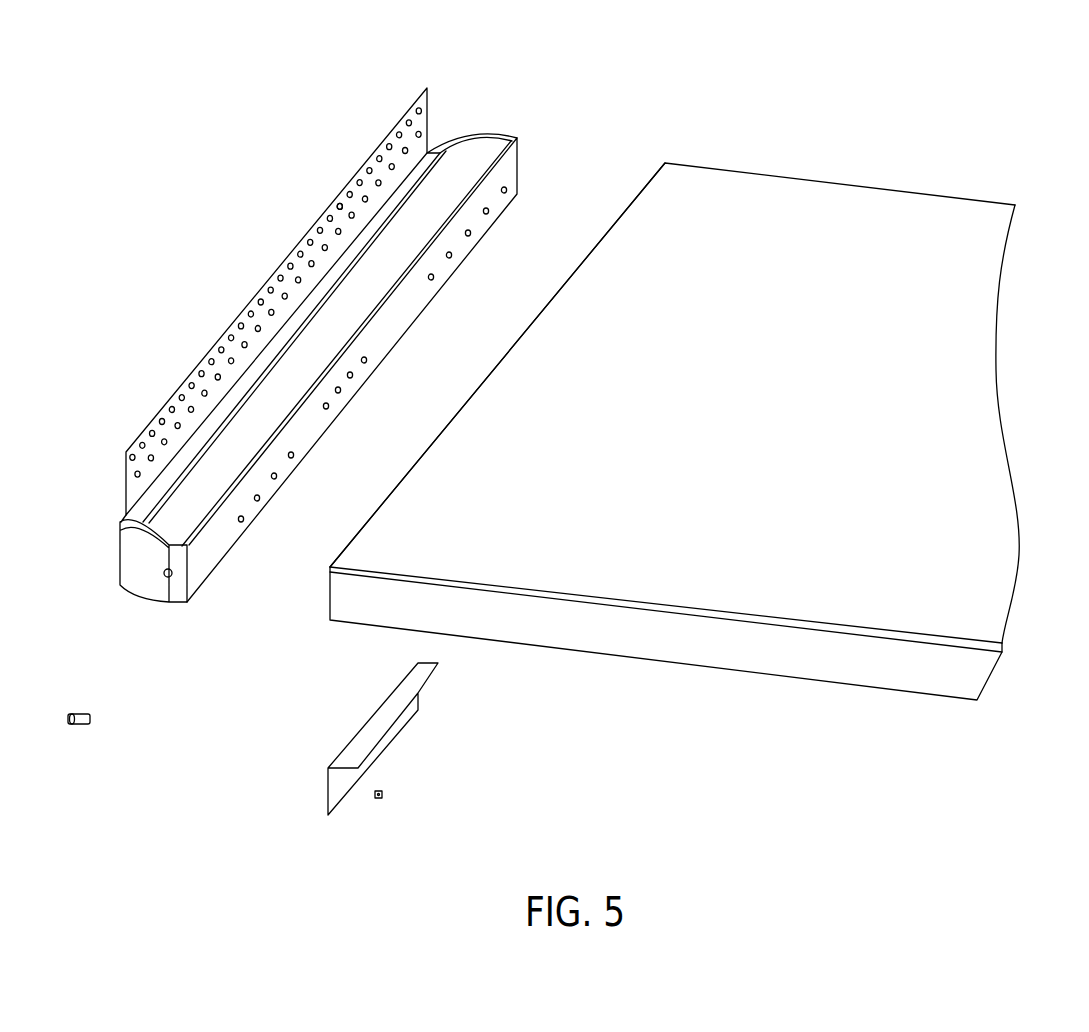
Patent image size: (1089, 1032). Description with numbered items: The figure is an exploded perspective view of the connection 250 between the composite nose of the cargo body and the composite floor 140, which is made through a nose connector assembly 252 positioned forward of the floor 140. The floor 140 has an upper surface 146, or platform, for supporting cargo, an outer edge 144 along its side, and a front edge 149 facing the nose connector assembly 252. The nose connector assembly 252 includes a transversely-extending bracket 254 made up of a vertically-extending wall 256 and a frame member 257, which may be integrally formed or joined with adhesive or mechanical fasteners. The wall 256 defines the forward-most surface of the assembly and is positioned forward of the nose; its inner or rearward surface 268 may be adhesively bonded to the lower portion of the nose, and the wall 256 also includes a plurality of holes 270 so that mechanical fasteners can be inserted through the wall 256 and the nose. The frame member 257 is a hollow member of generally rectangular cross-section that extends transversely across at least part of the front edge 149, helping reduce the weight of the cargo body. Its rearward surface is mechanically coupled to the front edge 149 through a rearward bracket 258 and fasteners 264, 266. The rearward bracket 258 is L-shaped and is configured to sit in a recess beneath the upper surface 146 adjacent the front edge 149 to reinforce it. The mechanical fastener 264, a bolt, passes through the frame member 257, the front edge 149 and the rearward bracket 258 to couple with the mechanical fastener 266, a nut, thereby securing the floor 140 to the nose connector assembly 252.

The floor 140 is at (698, 437).
The outer edge 144 is at (850, 668).
The upper surface 146 is at (844, 205).
The front edge 149 is at (414, 446).
The connection 250 is at (626, 86).
The nose connector assembly 252 is at (217, 258).
The transversely-extending bracket 254 is at (516, 113).
The vertically-extending wall 256 is at (314, 274).
The frame member 257 is at (510, 165).
The rearward bracket 258 is at (402, 749).
The mechanical fastener 264 is at (87, 739).
The mechanical fastener 266 is at (360, 812).
The rearward surface 268 is at (333, 208).
The holes 270 is at (312, 261).